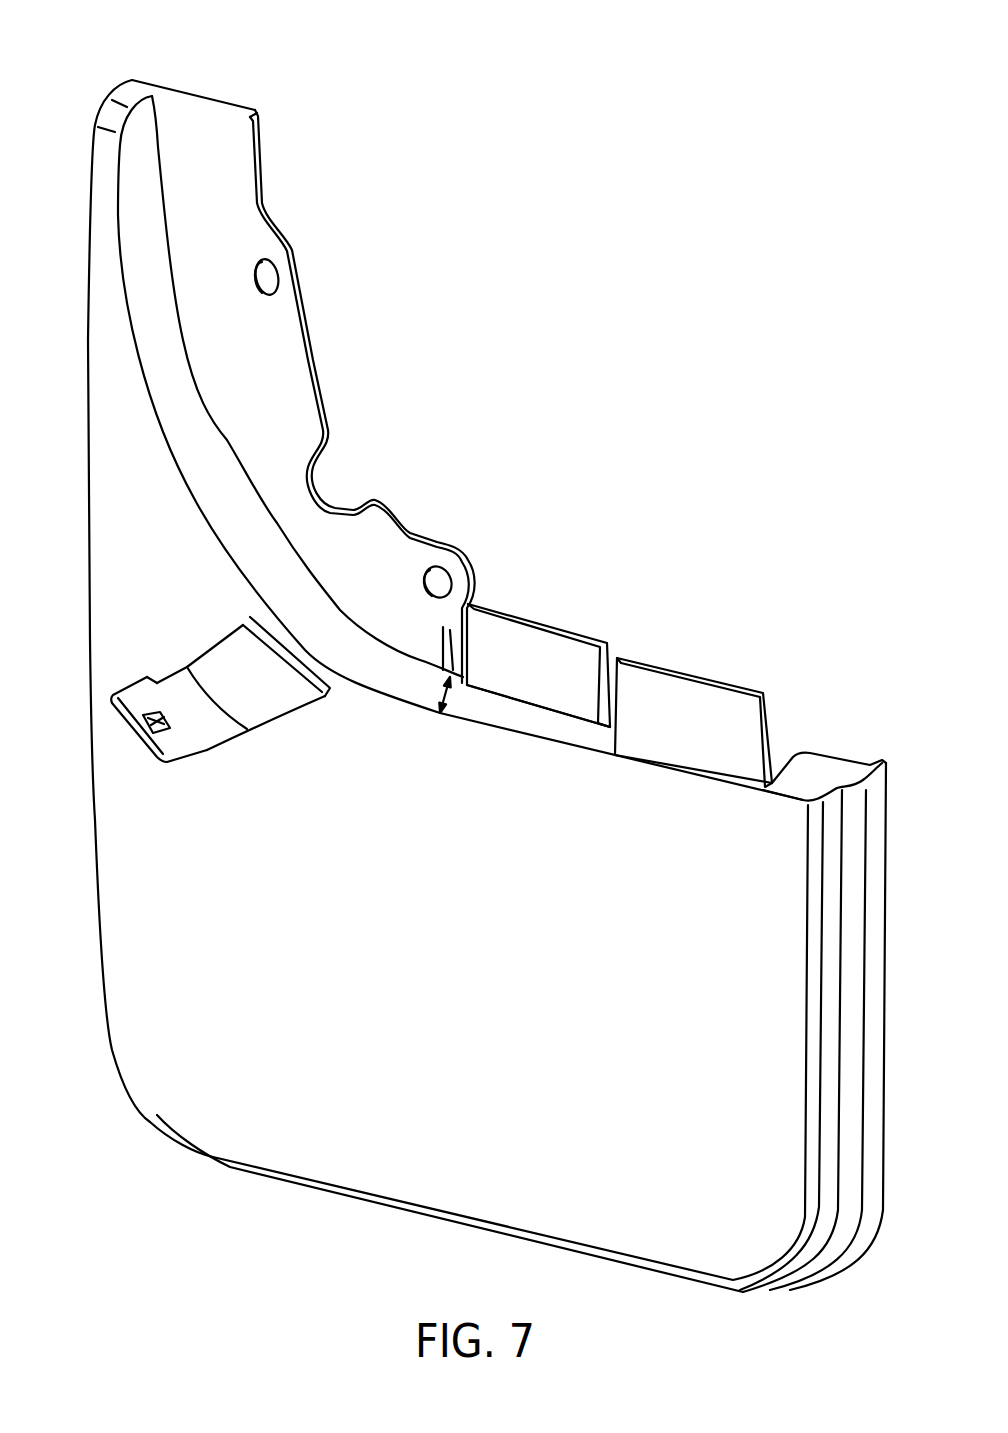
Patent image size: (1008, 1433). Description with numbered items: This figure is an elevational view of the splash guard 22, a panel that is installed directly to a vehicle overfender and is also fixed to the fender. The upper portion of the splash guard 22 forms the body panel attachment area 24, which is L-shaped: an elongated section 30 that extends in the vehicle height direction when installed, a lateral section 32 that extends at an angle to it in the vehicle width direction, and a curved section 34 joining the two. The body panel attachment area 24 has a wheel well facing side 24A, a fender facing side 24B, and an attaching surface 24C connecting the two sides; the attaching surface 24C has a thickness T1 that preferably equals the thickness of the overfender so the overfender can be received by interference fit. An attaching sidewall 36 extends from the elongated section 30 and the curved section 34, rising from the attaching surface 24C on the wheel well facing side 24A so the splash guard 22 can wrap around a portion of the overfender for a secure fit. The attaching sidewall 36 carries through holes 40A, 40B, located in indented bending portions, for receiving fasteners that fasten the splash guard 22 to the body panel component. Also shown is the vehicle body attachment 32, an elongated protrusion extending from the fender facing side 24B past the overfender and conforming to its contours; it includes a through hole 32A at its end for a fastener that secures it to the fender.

The splash guard 22 is at (460, 648).
The body panel attachment area 24 is at (460, 648).
The wheel well facing side 24A is at (452, 635).
The fender facing side 24B is at (672, 665).
The attaching surface 24C is at (537, 720).
The elongated section 30 is at (269, 397).
The vehicle body attachment 32 is at (496, 954).
The through hole 32A is at (147, 723).
The curved section 34 is at (212, 599).
The attaching sidewall 36 is at (260, 157).
The through hole 40A is at (450, 575).
The through hole 40B is at (279, 277).
The thickness T1 is at (447, 697).